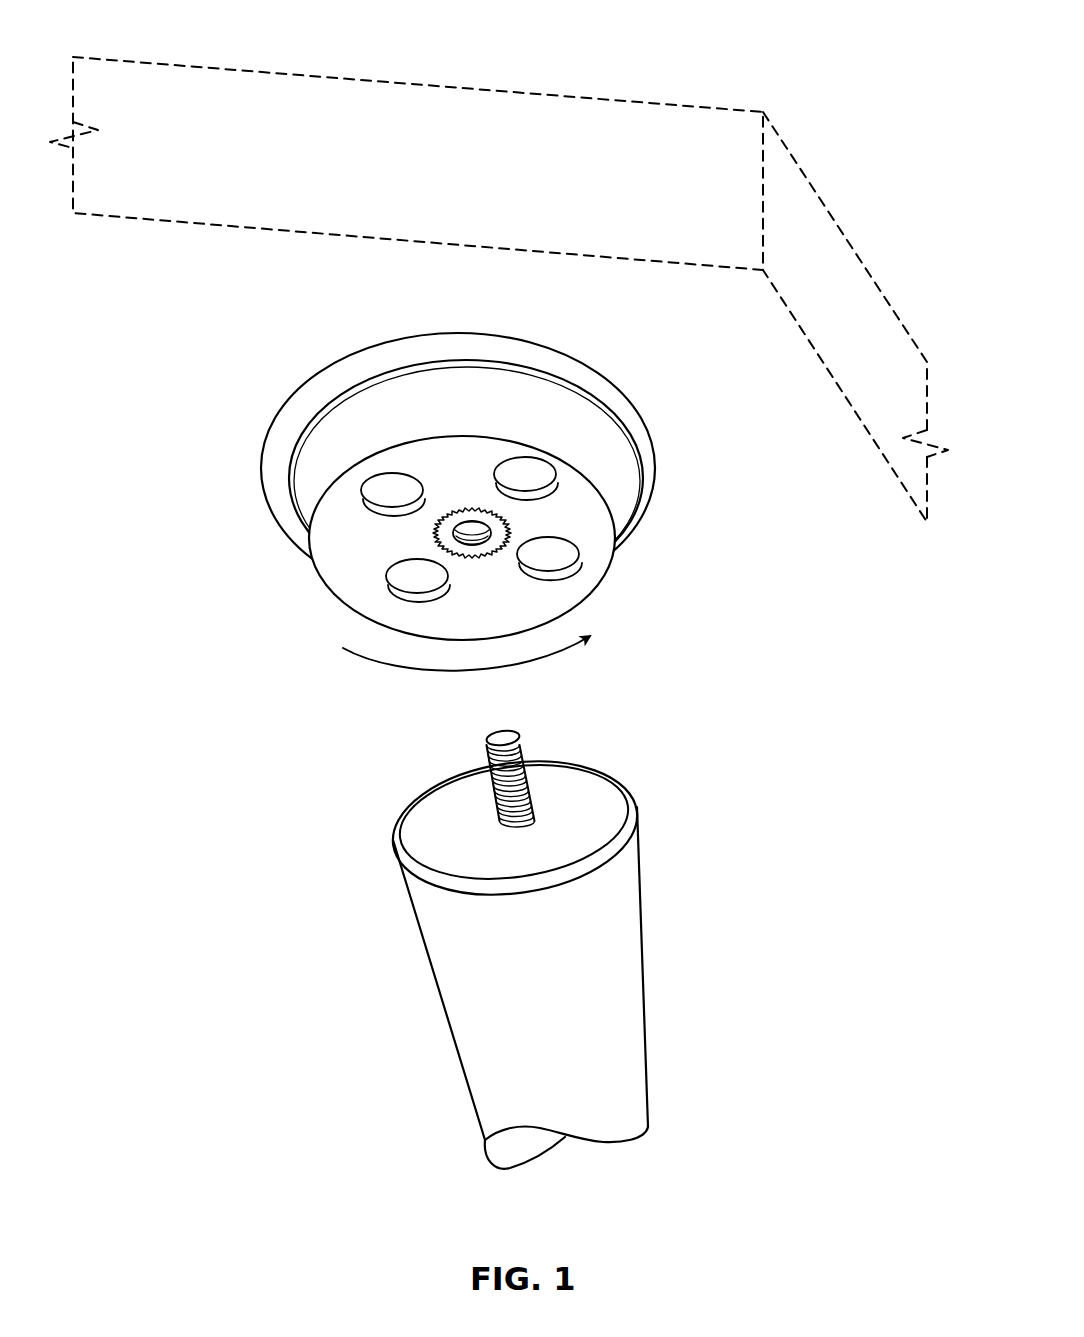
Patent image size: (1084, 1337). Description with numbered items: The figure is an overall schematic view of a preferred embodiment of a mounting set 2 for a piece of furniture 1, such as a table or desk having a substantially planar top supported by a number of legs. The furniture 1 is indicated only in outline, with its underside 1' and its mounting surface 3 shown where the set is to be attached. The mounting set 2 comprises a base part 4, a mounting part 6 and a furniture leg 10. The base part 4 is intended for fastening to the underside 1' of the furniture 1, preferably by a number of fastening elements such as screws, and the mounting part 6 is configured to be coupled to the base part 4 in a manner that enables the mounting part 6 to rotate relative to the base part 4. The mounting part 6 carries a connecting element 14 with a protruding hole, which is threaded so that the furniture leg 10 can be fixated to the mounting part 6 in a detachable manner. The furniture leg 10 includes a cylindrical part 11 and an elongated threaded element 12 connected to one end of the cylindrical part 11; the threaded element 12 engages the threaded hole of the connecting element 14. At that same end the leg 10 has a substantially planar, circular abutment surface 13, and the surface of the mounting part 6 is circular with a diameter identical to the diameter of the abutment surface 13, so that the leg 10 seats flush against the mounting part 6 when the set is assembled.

The furniture 1 is at (436, 140).
The underside of the furniture 1' is at (145, 317).
The mounting set 2 is at (433, 938).
The mounting surface of the furniture 3 is at (760, 356).
The base part 4 is at (468, 502).
The mounting part 6 is at (640, 542).
The furniture leg 10 is at (586, 938).
The cylindrical part 11 is at (648, 1003).
The elongated threaded element 12 is at (527, 742).
The abutment surface 13 is at (583, 795).
The connecting element 14 is at (440, 537).